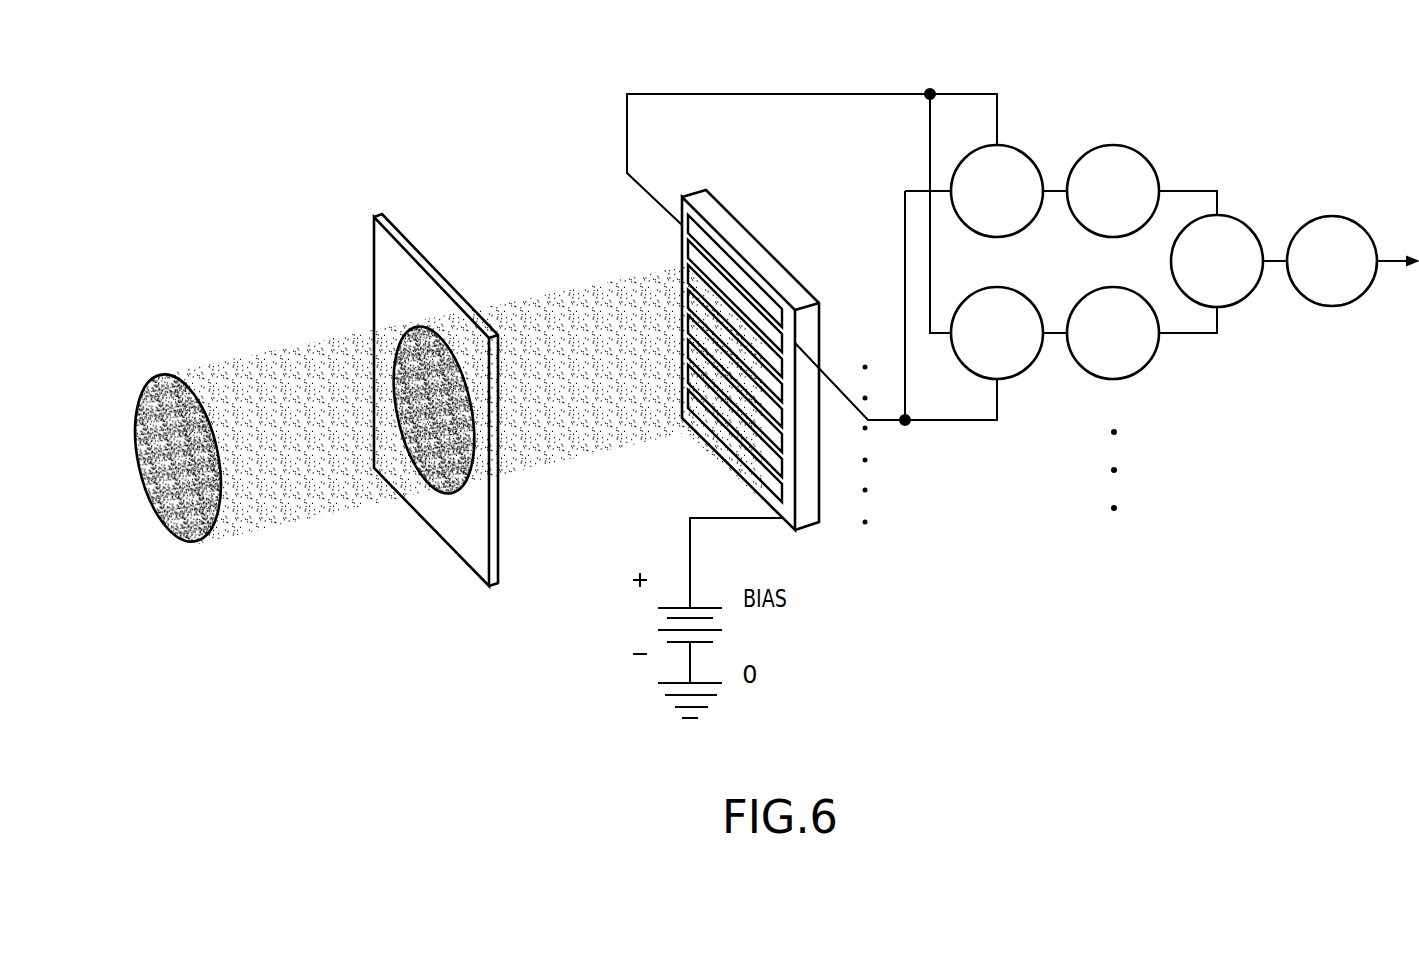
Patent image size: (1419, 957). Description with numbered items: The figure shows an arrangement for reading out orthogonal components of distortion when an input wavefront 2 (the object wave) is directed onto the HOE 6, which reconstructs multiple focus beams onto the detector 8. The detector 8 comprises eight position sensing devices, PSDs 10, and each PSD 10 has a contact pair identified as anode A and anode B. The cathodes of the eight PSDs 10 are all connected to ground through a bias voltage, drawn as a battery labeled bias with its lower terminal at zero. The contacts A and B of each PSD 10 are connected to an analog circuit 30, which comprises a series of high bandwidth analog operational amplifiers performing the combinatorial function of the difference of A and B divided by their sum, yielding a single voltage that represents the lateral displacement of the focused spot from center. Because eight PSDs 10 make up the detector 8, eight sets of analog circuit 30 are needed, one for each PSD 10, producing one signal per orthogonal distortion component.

The wavefront 2 is at (150, 492).
The HOE 6 is at (445, 548).
The detector 8 is at (785, 420).
The position sensing device 10 is at (775, 318).
The analog circuit 30 is at (1196, 156).
The anode A is at (645, 190).
The anode B is at (843, 393).